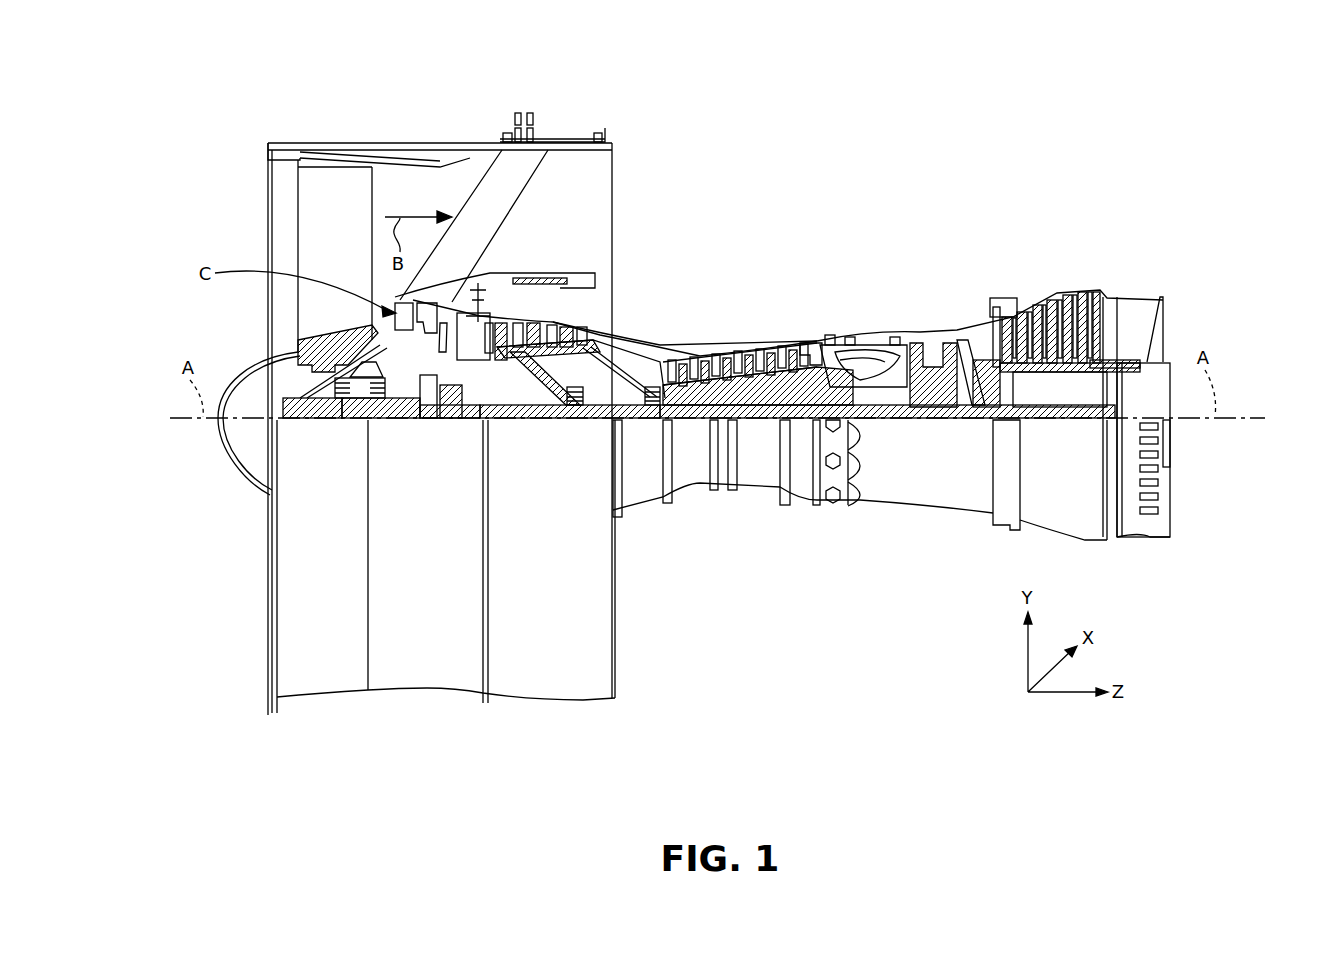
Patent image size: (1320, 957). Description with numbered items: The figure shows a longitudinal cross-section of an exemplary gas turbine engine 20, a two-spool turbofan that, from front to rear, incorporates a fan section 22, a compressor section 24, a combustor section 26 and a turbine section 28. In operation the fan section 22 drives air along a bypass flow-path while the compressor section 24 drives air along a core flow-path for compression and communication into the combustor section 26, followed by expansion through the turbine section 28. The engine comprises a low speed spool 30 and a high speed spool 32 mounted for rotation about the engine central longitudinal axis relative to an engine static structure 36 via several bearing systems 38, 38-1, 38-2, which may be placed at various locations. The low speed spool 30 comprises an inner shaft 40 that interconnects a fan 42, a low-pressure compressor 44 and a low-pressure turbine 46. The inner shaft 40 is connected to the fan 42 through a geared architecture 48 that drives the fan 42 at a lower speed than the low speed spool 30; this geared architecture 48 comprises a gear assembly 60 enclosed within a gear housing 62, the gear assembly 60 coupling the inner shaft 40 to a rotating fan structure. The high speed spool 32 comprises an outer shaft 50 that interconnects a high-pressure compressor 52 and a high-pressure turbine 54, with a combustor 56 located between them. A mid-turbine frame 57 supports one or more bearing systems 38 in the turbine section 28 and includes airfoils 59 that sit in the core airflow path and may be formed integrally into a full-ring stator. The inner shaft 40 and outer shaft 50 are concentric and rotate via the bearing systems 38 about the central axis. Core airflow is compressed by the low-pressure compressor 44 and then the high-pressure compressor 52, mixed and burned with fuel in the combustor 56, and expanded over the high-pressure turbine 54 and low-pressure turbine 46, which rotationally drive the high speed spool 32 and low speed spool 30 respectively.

The gas turbine engine 20 is at (904, 158).
The fan section 22 is at (455, 129).
The compressor section 24 is at (485, 238).
The combustor section 26 is at (925, 238).
The turbine section 28 is at (1105, 238).
The low speed spool 30 is at (765, 421).
The high speed spool 32 is at (803, 348).
The engine static structure 36 is at (428, 675).
The bearing system 38 is at (976, 421).
The bearing system 38-1 is at (339, 421).
The bearing system 38-2 is at (572, 421).
The inner shaft 40 is at (634, 421).
The fan 42 is at (335, 256).
The low-pressure compressor 44 is at (560, 318).
The low-pressure turbine 46 is at (1070, 300).
The geared architecture 48 is at (447, 421).
The outer shaft 50 is at (881, 421).
The high-pressure compressor 52 is at (745, 362).
The high-pressure turbine 54 is at (930, 343).
The combustor 56 is at (872, 345).
The mid-turbine frame 57 is at (968, 345).
The airfoils 59 is at (993, 335).
The gear assembly 60 is at (428, 421).
The gear housing 62 is at (462, 402).